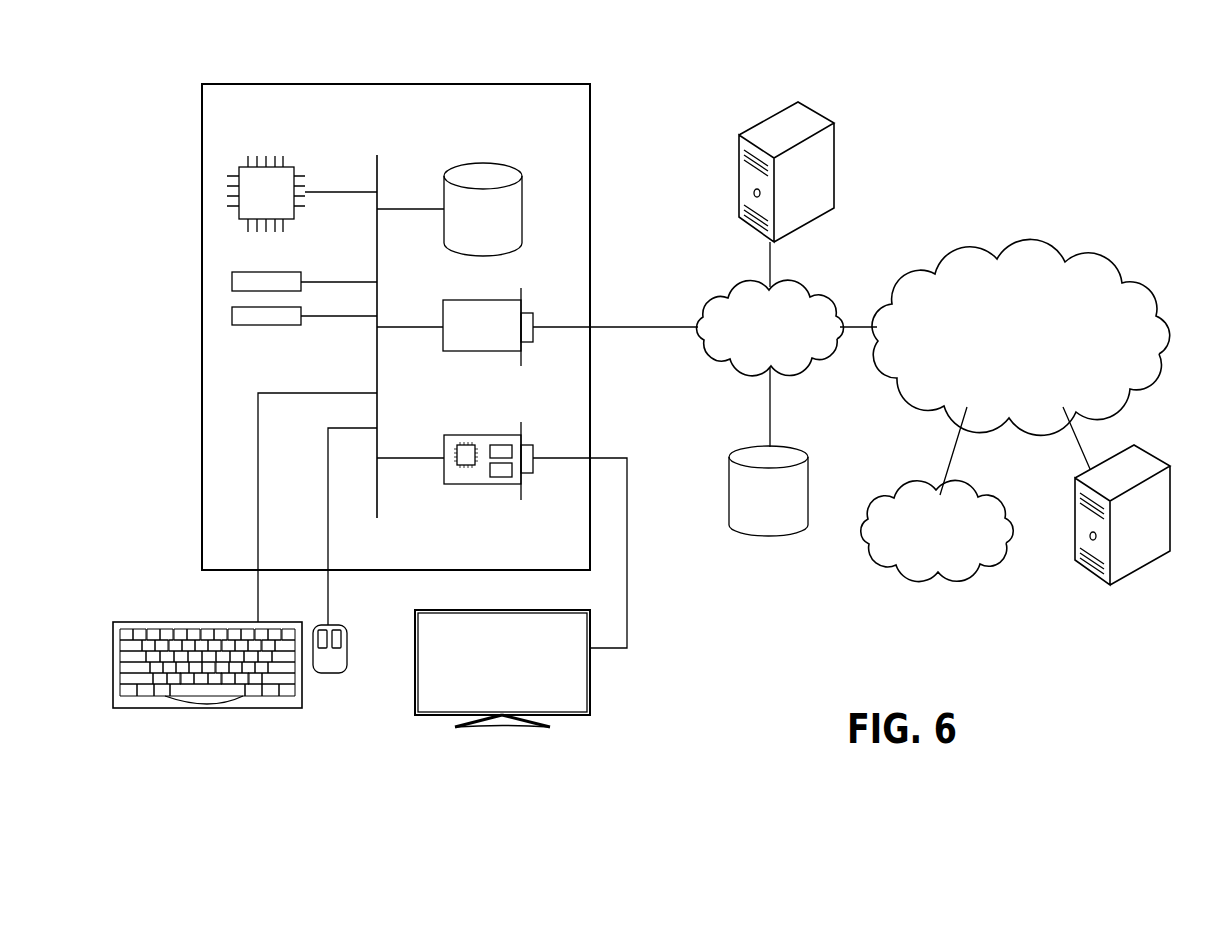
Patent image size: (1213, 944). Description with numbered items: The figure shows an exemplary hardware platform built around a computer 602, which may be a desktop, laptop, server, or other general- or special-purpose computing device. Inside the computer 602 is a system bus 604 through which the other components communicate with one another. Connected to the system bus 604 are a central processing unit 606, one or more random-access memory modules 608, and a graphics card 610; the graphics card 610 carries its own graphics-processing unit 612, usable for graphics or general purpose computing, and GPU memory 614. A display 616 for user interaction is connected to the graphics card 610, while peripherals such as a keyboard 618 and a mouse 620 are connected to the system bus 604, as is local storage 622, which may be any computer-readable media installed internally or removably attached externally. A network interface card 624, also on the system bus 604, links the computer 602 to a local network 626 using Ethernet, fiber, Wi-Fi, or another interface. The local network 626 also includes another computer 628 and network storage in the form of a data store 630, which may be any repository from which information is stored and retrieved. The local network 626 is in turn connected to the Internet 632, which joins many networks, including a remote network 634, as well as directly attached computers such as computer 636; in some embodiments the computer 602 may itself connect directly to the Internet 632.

The computer 602 is at (548, 83).
The system bus 604 is at (380, 165).
The central processing unit (CPU) 606 is at (288, 162).
The random-access memory (RAM) modules 608 is at (301, 312).
The graphics card 610 is at (444, 445).
The graphics-processing unit (GPU) 612 is at (466, 468).
The GPU memory 614 is at (500, 478).
The display 616 is at (590, 696).
The keyboard 618 is at (210, 710).
The mouse 620 is at (328, 676).
The local storage 622 is at (524, 192).
The network interface card (NIC) 624 is at (443, 305).
The local network 626 is at (822, 288).
The computer 628 is at (820, 110).
The data store 630 is at (800, 448).
The Internet 632 is at (1060, 255).
The remote network 634 is at (990, 493).
The computer 636 is at (1150, 445).